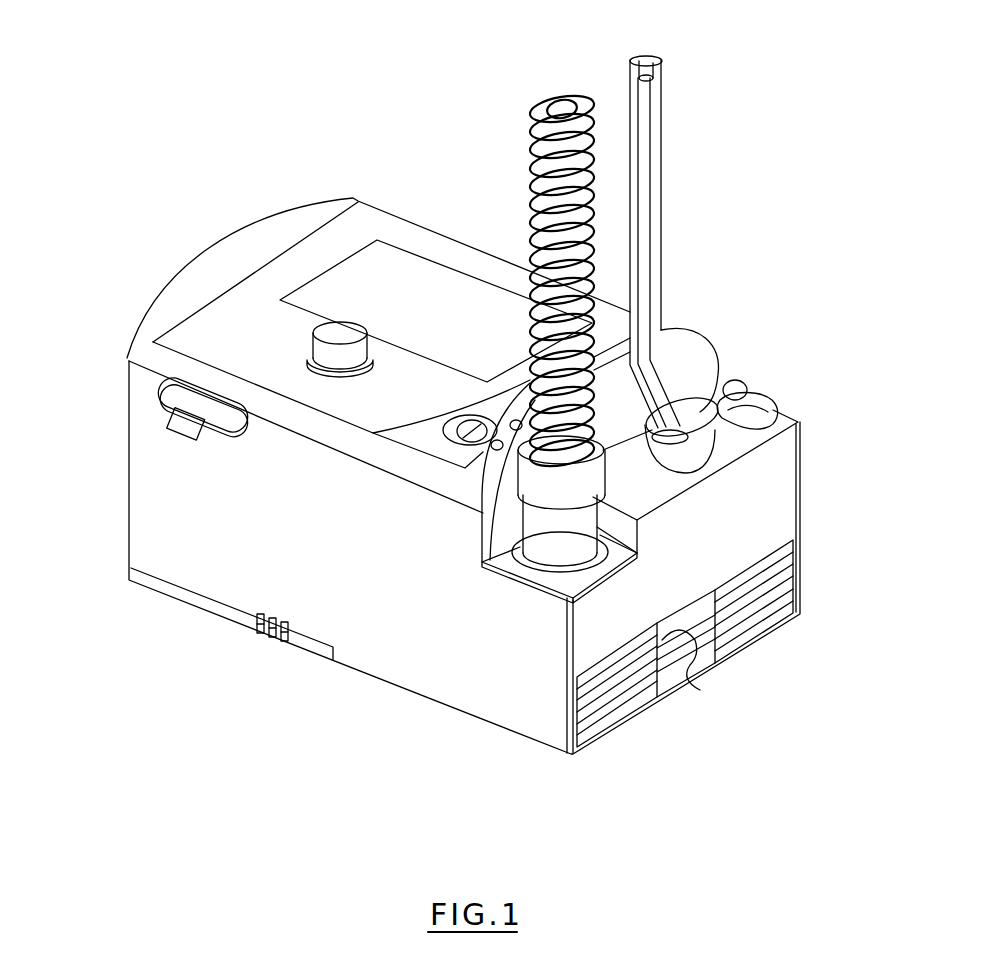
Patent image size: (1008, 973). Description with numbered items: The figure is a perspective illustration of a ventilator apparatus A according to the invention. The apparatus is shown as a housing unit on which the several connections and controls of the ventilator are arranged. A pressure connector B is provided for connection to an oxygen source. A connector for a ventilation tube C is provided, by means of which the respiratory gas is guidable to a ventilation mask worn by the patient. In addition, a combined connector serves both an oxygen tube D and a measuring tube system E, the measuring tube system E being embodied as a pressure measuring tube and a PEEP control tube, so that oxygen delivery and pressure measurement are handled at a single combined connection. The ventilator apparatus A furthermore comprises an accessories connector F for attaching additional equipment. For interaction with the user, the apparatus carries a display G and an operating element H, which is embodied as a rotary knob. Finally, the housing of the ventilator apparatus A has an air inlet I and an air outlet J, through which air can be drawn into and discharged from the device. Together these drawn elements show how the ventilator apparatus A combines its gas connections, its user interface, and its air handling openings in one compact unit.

The ventilator apparatus A is at (228, 196).
The pressure connector B is at (750, 383).
The connector for a ventilation tube C is at (460, 712).
The oxygen tube D is at (660, 312).
The measuring tube system E is at (635, 97).
The accessories connector F is at (790, 465).
The display G is at (390, 278).
The operating element H is at (150, 383).
The air inlet I is at (730, 640).
The air outlet J is at (268, 634).